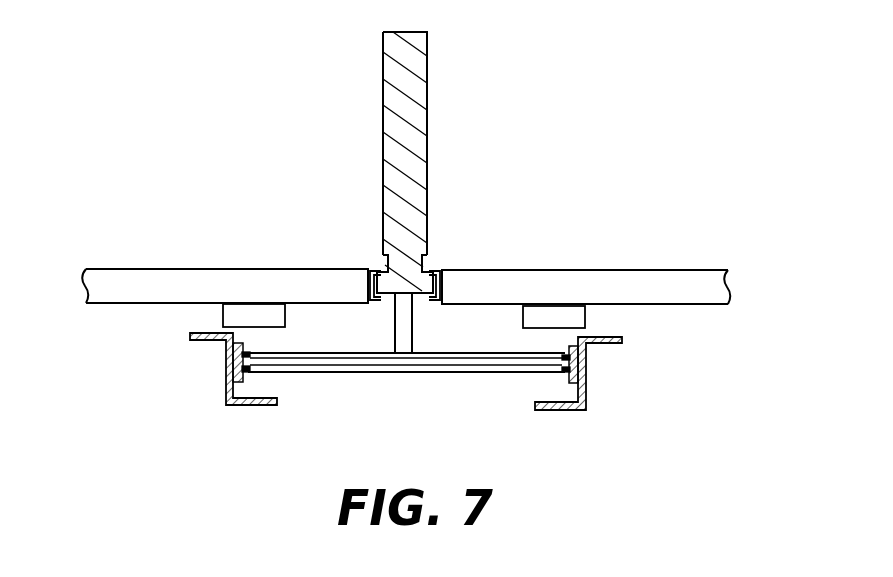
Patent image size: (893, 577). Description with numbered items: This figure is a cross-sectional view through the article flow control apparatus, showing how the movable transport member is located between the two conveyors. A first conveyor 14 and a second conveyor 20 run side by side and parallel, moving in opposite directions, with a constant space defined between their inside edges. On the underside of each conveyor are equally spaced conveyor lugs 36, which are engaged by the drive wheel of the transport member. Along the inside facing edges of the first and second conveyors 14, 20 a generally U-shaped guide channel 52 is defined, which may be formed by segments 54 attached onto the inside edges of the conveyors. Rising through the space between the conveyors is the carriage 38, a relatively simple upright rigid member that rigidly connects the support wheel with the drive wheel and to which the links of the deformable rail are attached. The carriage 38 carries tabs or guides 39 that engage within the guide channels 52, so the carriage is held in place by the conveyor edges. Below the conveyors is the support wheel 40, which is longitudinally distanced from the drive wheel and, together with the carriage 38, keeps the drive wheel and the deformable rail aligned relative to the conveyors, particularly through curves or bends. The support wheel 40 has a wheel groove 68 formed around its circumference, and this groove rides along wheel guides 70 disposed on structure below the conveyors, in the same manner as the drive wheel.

The first conveyor 14 is at (235, 282).
The second conveyor 20 is at (618, 288).
The conveyor lugs 36 is at (230, 317).
The carriage 38 is at (408, 100).
The tabs or guides 39 is at (411, 283).
The support wheel 40 is at (387, 375).
The guide channel 52 is at (370, 270).
The segments 54 is at (443, 270).
The wheel groove 68 is at (493, 363).
The wheel guides 70 is at (250, 362).